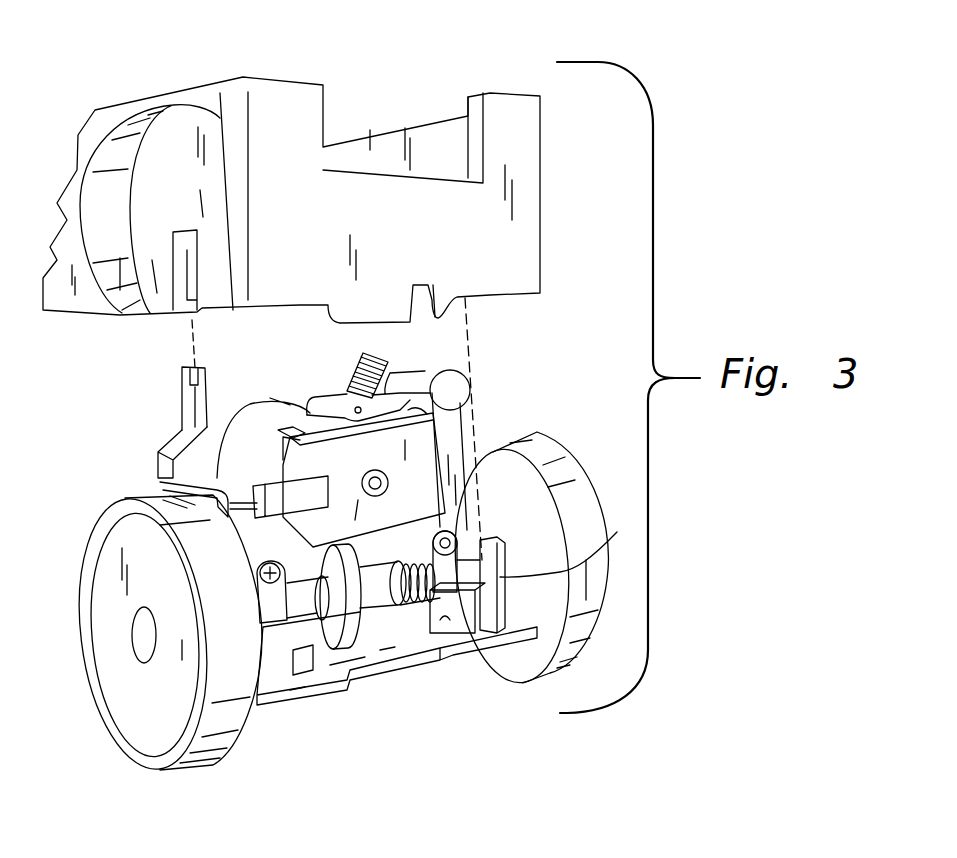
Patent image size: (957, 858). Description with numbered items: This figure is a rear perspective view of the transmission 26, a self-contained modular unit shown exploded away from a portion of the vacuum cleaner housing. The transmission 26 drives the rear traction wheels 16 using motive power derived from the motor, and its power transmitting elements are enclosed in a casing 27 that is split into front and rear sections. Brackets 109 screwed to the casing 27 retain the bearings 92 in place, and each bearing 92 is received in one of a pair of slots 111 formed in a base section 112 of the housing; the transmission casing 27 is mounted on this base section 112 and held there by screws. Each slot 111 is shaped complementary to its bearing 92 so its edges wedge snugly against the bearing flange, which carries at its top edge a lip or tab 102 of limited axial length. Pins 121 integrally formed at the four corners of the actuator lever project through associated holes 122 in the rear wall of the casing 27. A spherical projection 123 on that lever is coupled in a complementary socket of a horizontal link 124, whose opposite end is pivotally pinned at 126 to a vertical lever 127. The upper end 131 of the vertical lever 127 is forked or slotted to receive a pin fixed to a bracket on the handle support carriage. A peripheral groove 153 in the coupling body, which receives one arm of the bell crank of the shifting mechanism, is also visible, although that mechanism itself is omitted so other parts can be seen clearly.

The rear traction wheels 16 is at (127, 718).
The transmission 26 is at (465, 427).
The casing 27 is at (262, 427).
The bearings 92 is at (540, 554).
The lip or tab 102 is at (523, 468).
The brackets 109 is at (480, 570).
The slots 111 is at (170, 285).
The base section 112 is at (85, 300).
The pins 121 is at (303, 427).
The holes 122 is at (274, 430).
The spherical projection 123 is at (217, 517).
The horizontal link 124 is at (152, 633).
The pivot pin 126 is at (163, 487).
The vertical lever 127 is at (160, 434).
The upper end 131 is at (181, 383).
The peripheral groove 153 is at (367, 615).